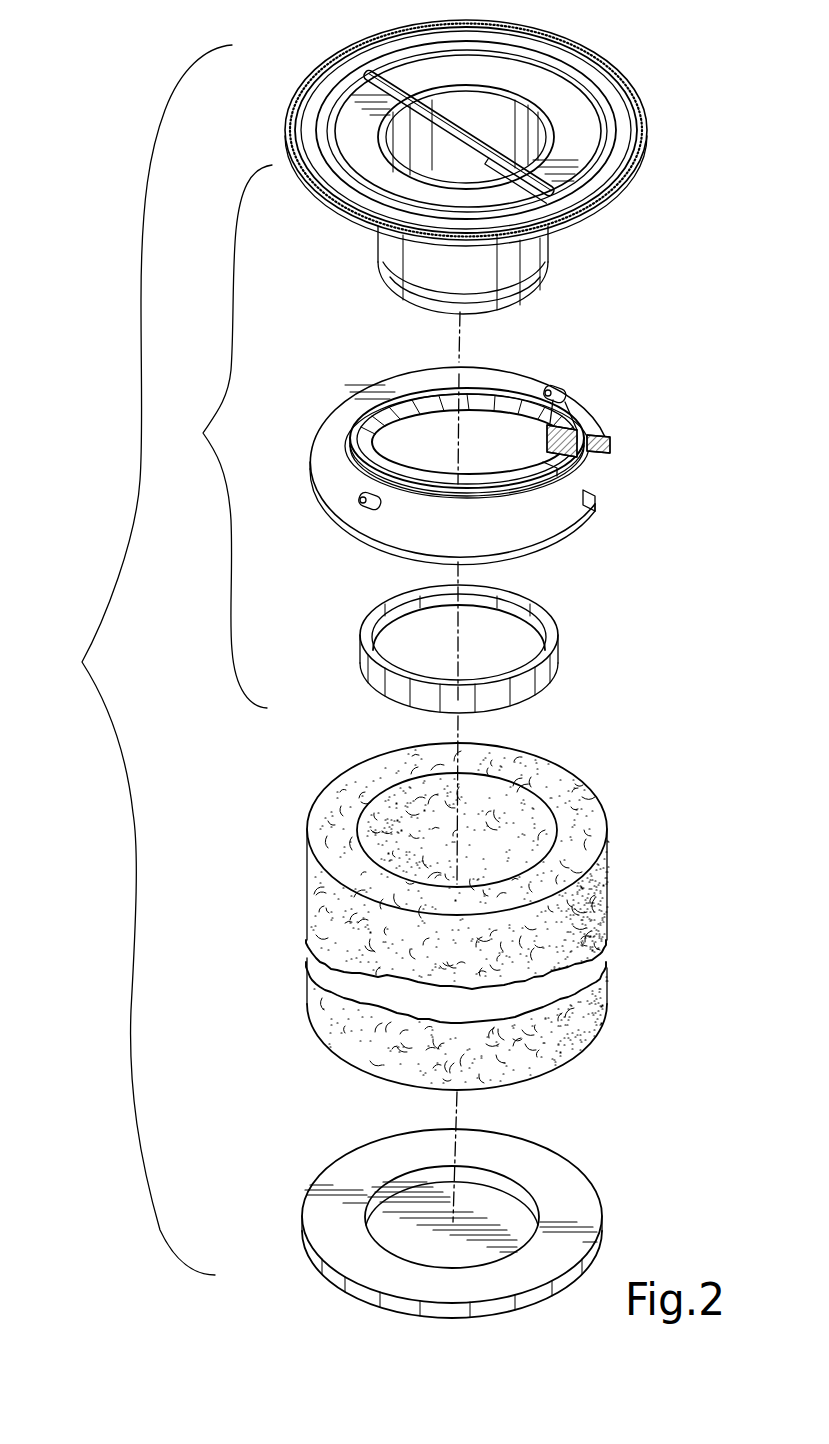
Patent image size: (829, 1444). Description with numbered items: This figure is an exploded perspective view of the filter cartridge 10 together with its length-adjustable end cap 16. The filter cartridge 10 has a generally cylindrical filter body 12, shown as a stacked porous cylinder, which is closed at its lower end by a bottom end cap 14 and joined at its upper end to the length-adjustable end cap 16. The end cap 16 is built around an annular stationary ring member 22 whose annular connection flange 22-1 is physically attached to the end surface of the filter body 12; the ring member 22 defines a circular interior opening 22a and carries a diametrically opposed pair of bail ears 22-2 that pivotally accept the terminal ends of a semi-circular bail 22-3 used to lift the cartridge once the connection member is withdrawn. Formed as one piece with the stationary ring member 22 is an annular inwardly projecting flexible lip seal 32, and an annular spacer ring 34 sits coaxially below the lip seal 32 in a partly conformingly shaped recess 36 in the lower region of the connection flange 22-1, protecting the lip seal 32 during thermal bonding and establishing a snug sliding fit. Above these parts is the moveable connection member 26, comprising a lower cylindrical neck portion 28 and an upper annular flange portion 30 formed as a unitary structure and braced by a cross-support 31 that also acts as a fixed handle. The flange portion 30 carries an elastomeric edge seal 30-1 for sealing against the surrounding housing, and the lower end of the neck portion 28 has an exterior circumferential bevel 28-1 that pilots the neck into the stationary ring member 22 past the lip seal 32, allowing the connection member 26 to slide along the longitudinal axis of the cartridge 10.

The filter cartridge 10 is at (139, 660).
The filter body 12 is at (610, 877).
The bottom end cap 14 is at (585, 1200).
The length-adjustable end cap 16 is at (223, 436).
The annular stationary ring member 22 is at (455, 446).
The annular connection flange 22-1 is at (332, 428).
The bail ears 22-2 is at (558, 390).
The semi-circular bail 22-3 is at (530, 508).
The circular interior opening 22a is at (443, 449).
The moveable connection member 26 is at (521, 131).
The cylindrical neck portion 28 is at (470, 275).
The exterior circumferential bevel 28-1 is at (492, 302).
The annular flange portion 30 is at (583, 134).
The elastomeric edge seal 30-1 is at (302, 87).
The cross-support 31 is at (453, 132).
The flexible lip seal 32 is at (397, 403).
The annular spacer ring 34 is at (558, 658).
The recess 36 is at (480, 403).